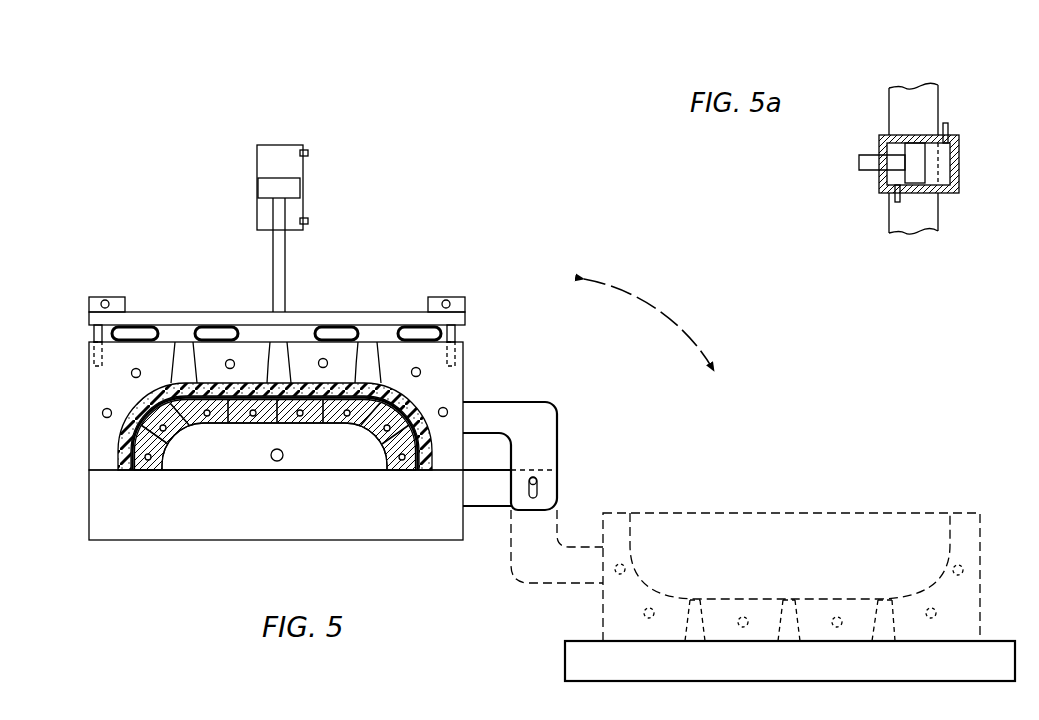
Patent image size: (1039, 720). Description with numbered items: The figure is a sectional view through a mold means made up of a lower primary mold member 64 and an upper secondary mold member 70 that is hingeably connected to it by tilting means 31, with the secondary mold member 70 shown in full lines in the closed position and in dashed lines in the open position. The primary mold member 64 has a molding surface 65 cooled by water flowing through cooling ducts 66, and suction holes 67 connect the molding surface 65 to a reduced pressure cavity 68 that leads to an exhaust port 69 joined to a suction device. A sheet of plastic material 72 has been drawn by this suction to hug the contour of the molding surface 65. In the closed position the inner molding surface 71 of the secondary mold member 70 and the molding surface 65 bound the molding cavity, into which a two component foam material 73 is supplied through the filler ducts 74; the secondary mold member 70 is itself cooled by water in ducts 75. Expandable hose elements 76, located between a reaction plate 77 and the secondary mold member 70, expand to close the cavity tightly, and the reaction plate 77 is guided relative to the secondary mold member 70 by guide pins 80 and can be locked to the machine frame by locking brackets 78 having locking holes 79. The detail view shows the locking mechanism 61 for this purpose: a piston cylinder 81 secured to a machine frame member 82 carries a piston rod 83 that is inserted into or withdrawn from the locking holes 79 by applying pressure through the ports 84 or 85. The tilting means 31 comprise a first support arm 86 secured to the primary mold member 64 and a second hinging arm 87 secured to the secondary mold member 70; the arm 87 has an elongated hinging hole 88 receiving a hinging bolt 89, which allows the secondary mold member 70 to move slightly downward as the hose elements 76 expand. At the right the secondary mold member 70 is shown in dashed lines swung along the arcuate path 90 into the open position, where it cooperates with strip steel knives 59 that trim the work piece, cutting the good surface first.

In FIG. 5, the tilting means 31 is at (552, 397).
In FIG. 5, the strip steel knives 59 is at (636, 528).
In FIG. 5a, the locking mechanism 61 is at (886, 80).
In FIG. 5, the primary mold member 64 is at (116, 530).
In FIG. 5, the molding surface 65 is at (157, 462).
In FIG. 5, the cooling ducts 66 is at (180, 410).
In FIG. 5, the suction holes 67 is at (229, 415).
In FIG. 5, the reduced pressure cavity 68 is at (307, 468).
In FIG. 5, the exhaust port 69 is at (273, 460).
In FIG. 5, the secondary mold member 70 is at (100, 381).
In FIG. 5, the inner molding surface 71 is at (124, 432).
In FIG. 5, the sheet of plastic material 72 is at (418, 460).
In FIG. 5, the two component foam material 73 is at (405, 408).
In FIG. 5, the filler ducts 74 is at (271, 360).
In FIG. 5, the ducts 75 is at (102, 413).
In FIG. 5, the expandable hose elements 76 is at (140, 334).
In FIG. 5, the reaction plate 77 is at (301, 325).
In FIG. 5, the locking brackets 78 is at (116, 300).
In FIG. 5, the locking holes 79 is at (102, 301).
In FIG. 5, the guide pins 80 is at (94, 333).
In FIG. 5a, the piston cylinder 81 is at (960, 161).
In FIG. 5a, the machine frame member 82 is at (933, 100).
In FIG. 5a, the piston rod 83 is at (868, 155).
In FIG. 5a, the port 84 is at (895, 196).
In FIG. 5a, the port 85 is at (949, 130).
In FIG. 5, the first support arm 86 is at (482, 497).
In FIG. 5, the second hinging arm 87 is at (552, 420).
In FIG. 5, the elongated hinging hole 88 is at (540, 492).
In FIG. 5, the hinging bolt 89 is at (537, 481).
In FIG. 5, the arcuate path 90 is at (663, 318).